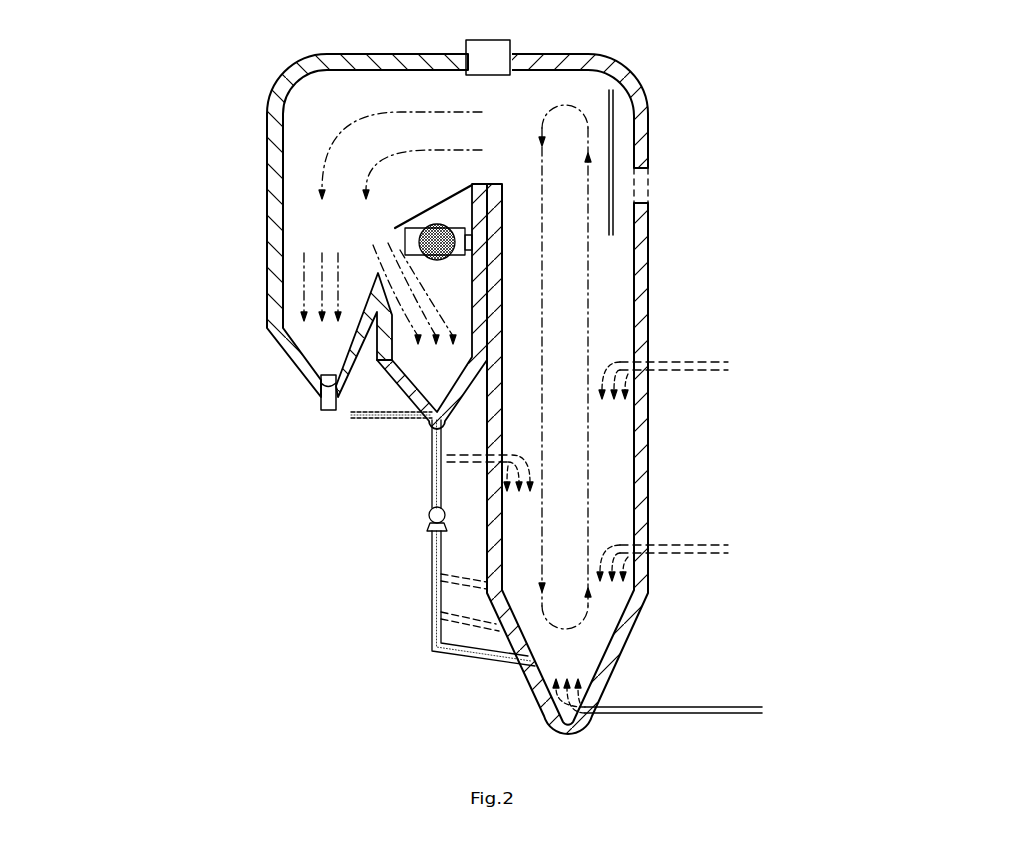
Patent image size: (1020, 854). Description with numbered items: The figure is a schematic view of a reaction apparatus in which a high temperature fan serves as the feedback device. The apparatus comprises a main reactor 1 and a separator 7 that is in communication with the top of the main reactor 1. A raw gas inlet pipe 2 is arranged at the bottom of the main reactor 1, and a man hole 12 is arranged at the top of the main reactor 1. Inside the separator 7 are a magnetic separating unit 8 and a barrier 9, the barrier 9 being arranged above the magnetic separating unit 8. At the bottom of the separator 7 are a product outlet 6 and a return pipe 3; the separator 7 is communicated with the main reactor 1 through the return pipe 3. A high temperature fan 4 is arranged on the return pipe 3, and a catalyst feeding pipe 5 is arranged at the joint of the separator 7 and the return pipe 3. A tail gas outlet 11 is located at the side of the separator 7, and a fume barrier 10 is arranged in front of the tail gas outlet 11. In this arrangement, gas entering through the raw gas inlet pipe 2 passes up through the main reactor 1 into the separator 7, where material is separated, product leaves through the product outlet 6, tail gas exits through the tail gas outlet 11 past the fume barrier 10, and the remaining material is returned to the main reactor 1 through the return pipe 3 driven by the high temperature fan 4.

The main reactor 1 is at (612, 325).
The raw gas inlet pipe 2 is at (700, 377).
The return pipe 3 is at (490, 625).
The high temperature fan 4 is at (418, 517).
The catalyst feeding pipe 5 is at (370, 419).
The product outlet 6 is at (318, 403).
The separator 7 is at (295, 301).
The magnetic separating unit 8 is at (405, 241).
The barrier 9 is at (408, 214).
The fume barrier 10 is at (609, 222).
The tail gas outlet 11 is at (634, 203).
The man hole 12 is at (493, 46).